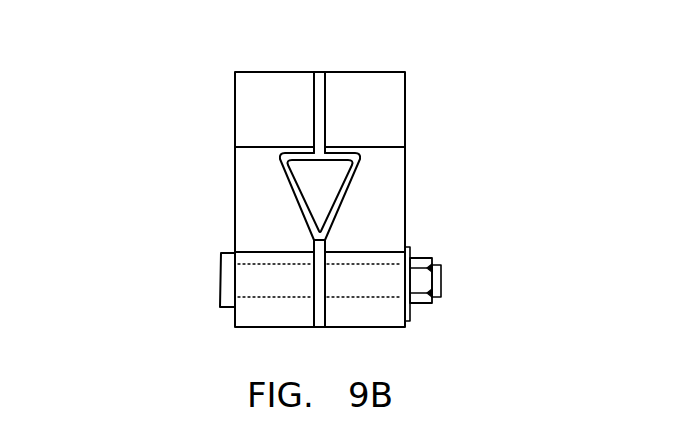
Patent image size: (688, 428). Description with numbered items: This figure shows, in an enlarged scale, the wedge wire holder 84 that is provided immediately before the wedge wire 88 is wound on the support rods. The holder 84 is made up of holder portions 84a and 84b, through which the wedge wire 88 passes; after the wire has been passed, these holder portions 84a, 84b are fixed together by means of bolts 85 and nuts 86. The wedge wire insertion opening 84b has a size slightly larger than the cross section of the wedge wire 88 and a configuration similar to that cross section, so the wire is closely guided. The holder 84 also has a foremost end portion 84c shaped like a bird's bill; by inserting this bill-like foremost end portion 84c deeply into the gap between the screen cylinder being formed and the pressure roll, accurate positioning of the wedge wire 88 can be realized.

The wedge wire holder 84 is at (390, 60).
The holder portion 84a is at (257, 112).
The wedge wire insertion opening 84b is at (311, 213).
The foremost end portion 84c is at (382, 224).
The bolt 85 is at (227, 289).
The nut 86 is at (420, 282).
The wedge wire 88 is at (328, 193).